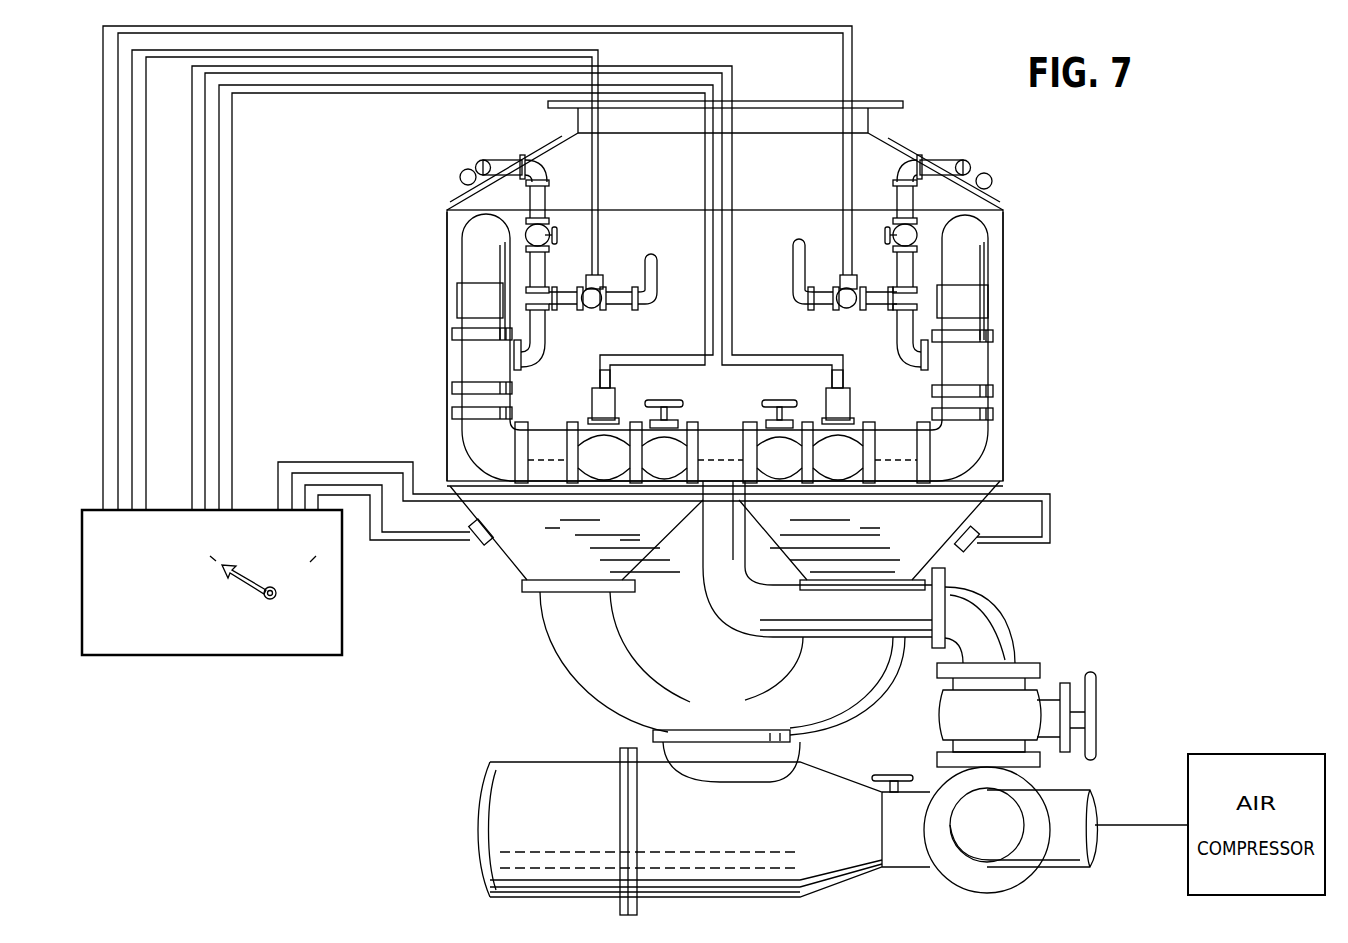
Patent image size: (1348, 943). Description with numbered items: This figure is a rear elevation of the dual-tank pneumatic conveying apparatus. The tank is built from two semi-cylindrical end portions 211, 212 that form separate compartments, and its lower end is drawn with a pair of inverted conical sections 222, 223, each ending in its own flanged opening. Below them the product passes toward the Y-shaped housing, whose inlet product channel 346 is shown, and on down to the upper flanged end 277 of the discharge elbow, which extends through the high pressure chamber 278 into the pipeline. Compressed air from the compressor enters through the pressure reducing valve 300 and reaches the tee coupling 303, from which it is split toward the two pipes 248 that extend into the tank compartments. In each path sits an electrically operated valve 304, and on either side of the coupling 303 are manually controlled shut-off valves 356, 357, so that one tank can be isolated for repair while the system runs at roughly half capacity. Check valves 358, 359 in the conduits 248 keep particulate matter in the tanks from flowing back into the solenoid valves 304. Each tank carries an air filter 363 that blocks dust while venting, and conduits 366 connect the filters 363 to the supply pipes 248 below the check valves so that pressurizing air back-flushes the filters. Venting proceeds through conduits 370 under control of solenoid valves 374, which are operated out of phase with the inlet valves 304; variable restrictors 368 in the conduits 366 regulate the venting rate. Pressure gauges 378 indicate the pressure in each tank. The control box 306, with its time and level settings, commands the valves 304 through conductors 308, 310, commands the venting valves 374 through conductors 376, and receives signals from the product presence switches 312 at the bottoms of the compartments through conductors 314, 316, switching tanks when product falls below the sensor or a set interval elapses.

The semi-cylindrical end portion 211 is at (1012, 234).
The semi-cylindrical end portion 212 is at (447, 272).
The inverted conical section 222 is at (538, 556).
The inverted conical section 223 is at (938, 556).
The pipe 248 is at (475, 240).
The upper flanged end 277 is at (795, 744).
The high pressure chamber 278 is at (741, 843).
The pressure reducing valve 300 is at (1099, 730).
The tee coupling 303 is at (718, 438).
The valve 304 is at (603, 465).
The control box 306 is at (343, 641).
The conductor 308 is at (598, 375).
The conductor 310 is at (800, 360).
The switch 312 is at (486, 545).
The conductor 314 is at (1052, 520).
The conductor 316 is at (432, 546).
The inlet product channel 346 is at (850, 700).
The manually controlled shut-off valve 356 is at (674, 400).
The manually controlled shut-off valve 357 is at (788, 400).
The check valve 358 is at (978, 306).
The check valve 359 is at (462, 303).
The air filter 363 is at (447, 207).
The conduit 366 is at (515, 158).
The variable restrictor 368 is at (556, 243).
The conduit 370 is at (658, 270).
The solenoid valve 374 is at (595, 310).
The conductor 376 is at (598, 262).
The pressure gauge 378 is at (460, 172).